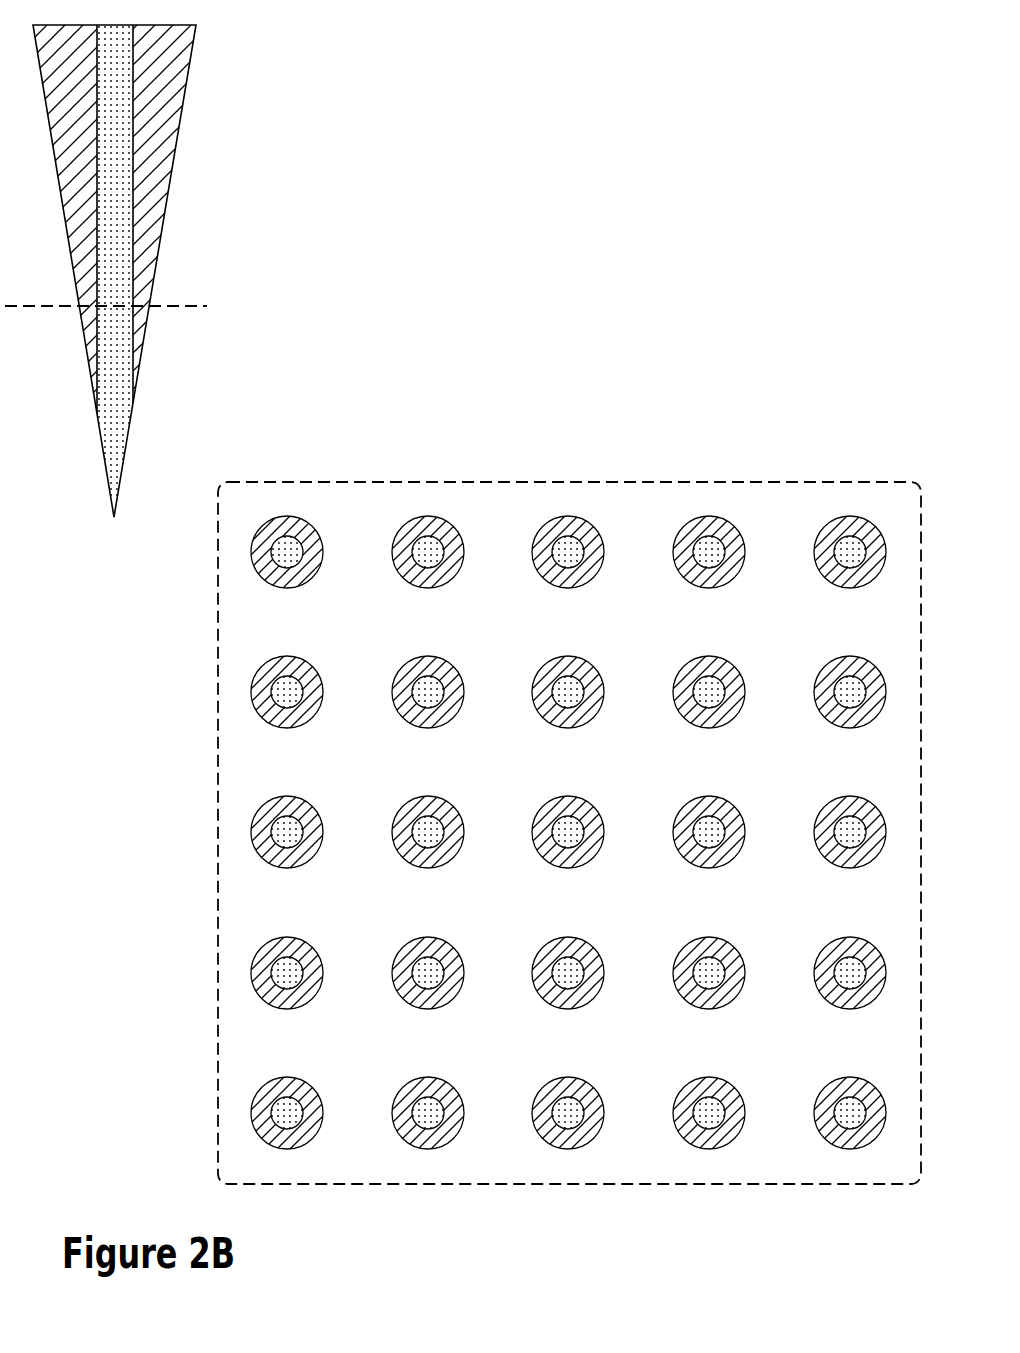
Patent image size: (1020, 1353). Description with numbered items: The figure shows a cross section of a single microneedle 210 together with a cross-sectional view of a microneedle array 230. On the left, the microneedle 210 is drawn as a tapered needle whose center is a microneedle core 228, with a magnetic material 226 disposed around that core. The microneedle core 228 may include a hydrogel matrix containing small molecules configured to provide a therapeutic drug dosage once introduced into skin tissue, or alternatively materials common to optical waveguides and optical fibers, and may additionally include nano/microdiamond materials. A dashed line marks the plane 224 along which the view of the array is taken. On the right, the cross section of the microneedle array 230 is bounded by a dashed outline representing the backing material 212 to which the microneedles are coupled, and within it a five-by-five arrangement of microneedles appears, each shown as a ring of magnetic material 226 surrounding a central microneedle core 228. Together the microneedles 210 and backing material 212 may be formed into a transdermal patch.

The microneedle 210 is at (224, 166).
The backing material 212 is at (743, 482).
The plane 224 is at (180, 308).
The magnetic material 226 is at (160, 250).
The microneedle core 228 is at (127, 458).
The microneedle array 230 is at (613, 448).